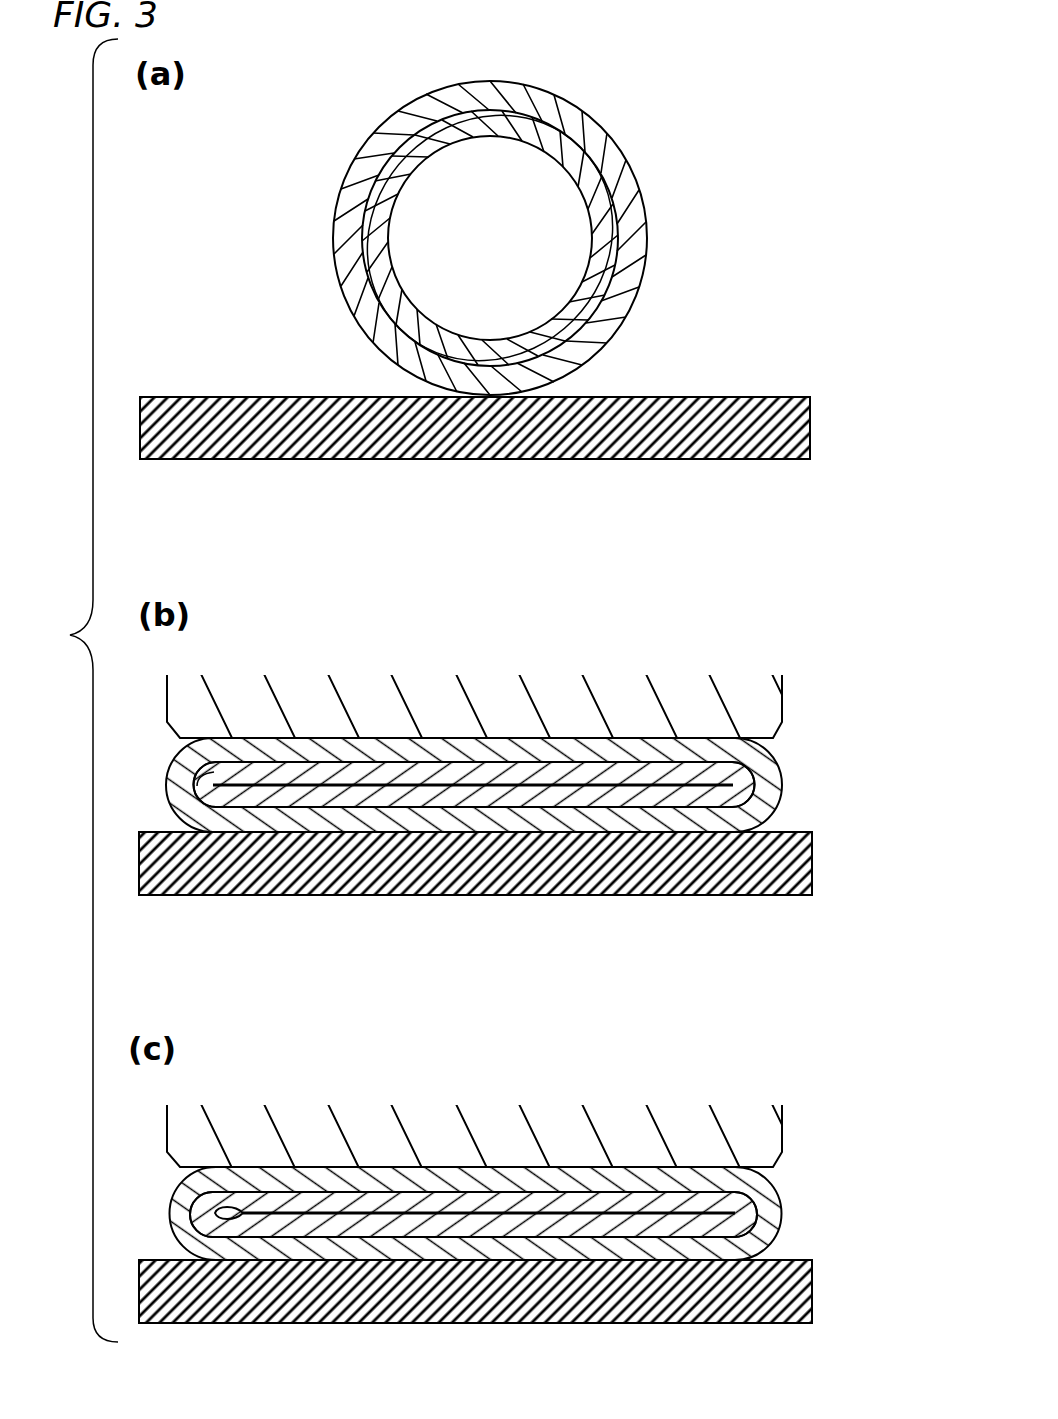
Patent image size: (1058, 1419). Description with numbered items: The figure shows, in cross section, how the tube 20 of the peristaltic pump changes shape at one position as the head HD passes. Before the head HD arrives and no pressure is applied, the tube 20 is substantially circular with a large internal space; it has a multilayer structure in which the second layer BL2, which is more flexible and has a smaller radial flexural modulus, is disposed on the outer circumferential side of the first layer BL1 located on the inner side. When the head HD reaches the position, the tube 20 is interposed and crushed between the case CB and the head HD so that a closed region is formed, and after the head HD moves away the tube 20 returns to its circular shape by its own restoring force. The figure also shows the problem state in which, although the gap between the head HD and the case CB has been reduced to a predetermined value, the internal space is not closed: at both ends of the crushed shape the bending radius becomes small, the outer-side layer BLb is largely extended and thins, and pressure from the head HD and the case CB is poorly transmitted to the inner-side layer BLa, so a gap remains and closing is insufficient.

The tube 20 is at (658, 186).
The first layer BL1 is at (607, 260).
The second layer BL2 is at (627, 287).
The case CB is at (782, 418).
The head HD is at (765, 703).
The layer located on inner side BLa is at (743, 1198).
The layer on outer circumferential side BLb is at (763, 1235).